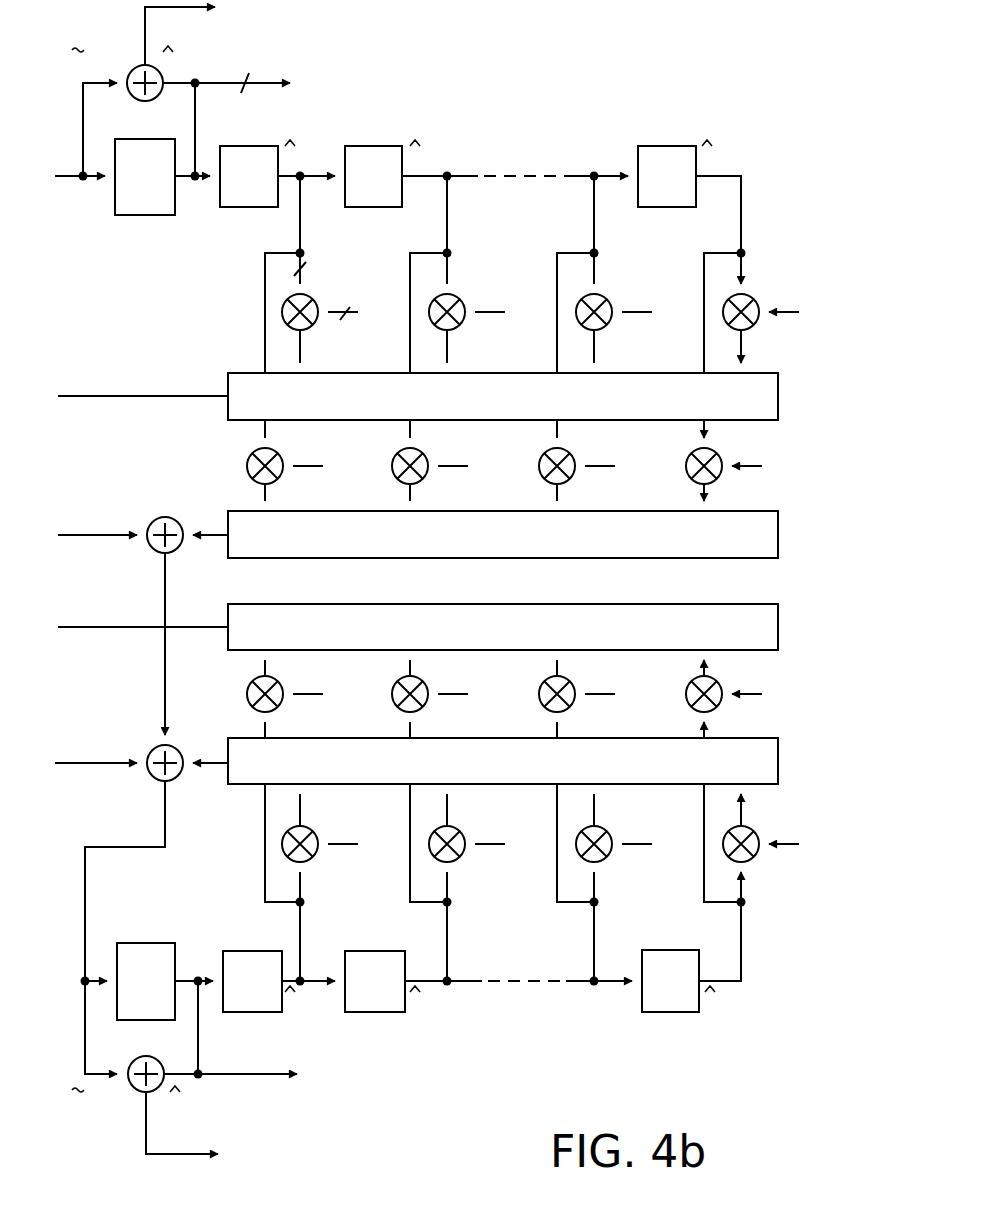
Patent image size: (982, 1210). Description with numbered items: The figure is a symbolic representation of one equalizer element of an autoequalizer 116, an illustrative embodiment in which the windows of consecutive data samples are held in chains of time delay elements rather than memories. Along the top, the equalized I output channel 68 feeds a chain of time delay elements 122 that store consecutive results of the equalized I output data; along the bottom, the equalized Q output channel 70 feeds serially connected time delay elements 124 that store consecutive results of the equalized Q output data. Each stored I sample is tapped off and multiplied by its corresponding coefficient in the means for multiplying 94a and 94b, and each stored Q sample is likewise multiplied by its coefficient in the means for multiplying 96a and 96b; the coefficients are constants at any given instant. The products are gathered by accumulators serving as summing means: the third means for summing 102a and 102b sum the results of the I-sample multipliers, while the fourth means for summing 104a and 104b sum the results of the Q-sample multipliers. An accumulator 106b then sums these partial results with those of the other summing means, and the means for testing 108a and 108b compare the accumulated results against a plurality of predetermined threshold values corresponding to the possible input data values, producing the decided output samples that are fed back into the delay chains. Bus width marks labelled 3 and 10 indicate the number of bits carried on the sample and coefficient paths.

The autoequalizer 116 is at (640, 66).
The I output channel 68 is at (270, 83).
The Q output channel 70 is at (280, 1075).
The time delay elements 122 is at (668, 114).
The serially connected time delay elements 124 is at (658, 1048).
The means for testing 108a is at (147, 215).
The means for testing 108b is at (142, 943).
The means for multiplying 94a is at (283, 312).
The means for multiplying 94b is at (283, 845).
The means for multiplying 96a is at (247, 690).
The means for multiplying 96b is at (247, 463).
The third means for summing 102a is at (228, 380).
The third means for summing 102b is at (245, 787).
The fourth means for summing 104a is at (423, 604).
The fourth means for summing 104b is at (392, 559).
The accumulator 106b is at (155, 750).
The 3-bit bus 3 is at (280, 168).
The 10-bit bus 10 is at (347, 304).